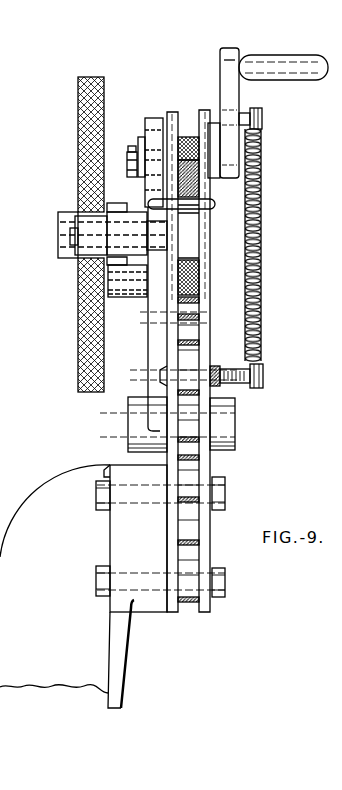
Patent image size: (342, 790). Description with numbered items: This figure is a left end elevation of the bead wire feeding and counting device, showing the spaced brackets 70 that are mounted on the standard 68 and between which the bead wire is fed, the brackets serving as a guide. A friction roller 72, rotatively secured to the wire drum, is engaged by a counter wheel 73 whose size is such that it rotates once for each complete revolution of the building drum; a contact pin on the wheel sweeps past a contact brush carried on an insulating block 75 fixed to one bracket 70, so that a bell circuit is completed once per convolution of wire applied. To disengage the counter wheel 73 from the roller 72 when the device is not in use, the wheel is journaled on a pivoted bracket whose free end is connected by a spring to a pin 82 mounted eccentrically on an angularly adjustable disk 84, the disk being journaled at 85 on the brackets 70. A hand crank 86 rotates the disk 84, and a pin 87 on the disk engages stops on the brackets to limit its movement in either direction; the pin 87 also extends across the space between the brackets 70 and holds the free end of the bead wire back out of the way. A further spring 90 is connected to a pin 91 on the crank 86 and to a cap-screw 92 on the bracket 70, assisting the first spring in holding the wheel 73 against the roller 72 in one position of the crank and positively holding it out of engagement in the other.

The standard 68 is at (53, 512).
The brackets 70 is at (205, 535).
The friction roller 72 is at (88, 233).
The counter wheel 73 is at (78, 119).
The insulating block 75 is at (133, 300).
The pin 82 is at (128, 167).
The angularly adjustable disk 84 is at (154, 127).
The journals 85 is at (173, 112).
The hand crank 86 is at (227, 73).
The pin 87 is at (213, 207).
The spring 90 is at (262, 293).
The pin 91 is at (262, 118).
The cap-screw 92 is at (265, 381).